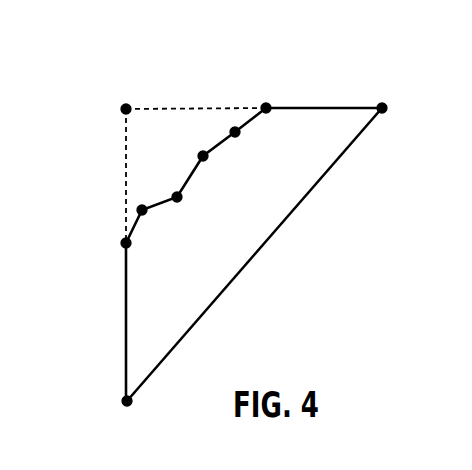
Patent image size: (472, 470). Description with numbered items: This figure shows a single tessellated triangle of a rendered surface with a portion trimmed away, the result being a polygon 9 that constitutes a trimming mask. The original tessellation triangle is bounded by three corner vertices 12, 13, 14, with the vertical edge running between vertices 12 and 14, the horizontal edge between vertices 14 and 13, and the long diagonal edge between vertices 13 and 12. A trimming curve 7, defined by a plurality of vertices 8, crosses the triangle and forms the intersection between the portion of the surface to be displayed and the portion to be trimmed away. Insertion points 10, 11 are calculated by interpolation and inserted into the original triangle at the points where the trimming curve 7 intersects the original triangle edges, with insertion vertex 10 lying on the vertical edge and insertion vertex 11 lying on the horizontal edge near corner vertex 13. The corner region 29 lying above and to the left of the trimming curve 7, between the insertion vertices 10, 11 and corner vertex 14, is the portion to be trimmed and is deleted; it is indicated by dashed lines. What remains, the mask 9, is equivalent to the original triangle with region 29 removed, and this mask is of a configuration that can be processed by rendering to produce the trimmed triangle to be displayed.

The trimming curve 7 is at (191, 177).
The vertices 8 is at (234, 128).
The polygon (trimming mask) 9 is at (143, 305).
The insertion point (vertex) 10 is at (125, 243).
The insertion point (vertex) 11 is at (267, 106).
The point 12 is at (128, 405).
The point 13 is at (383, 106).
The point 14 is at (125, 107).
The region 29 is at (141, 156).